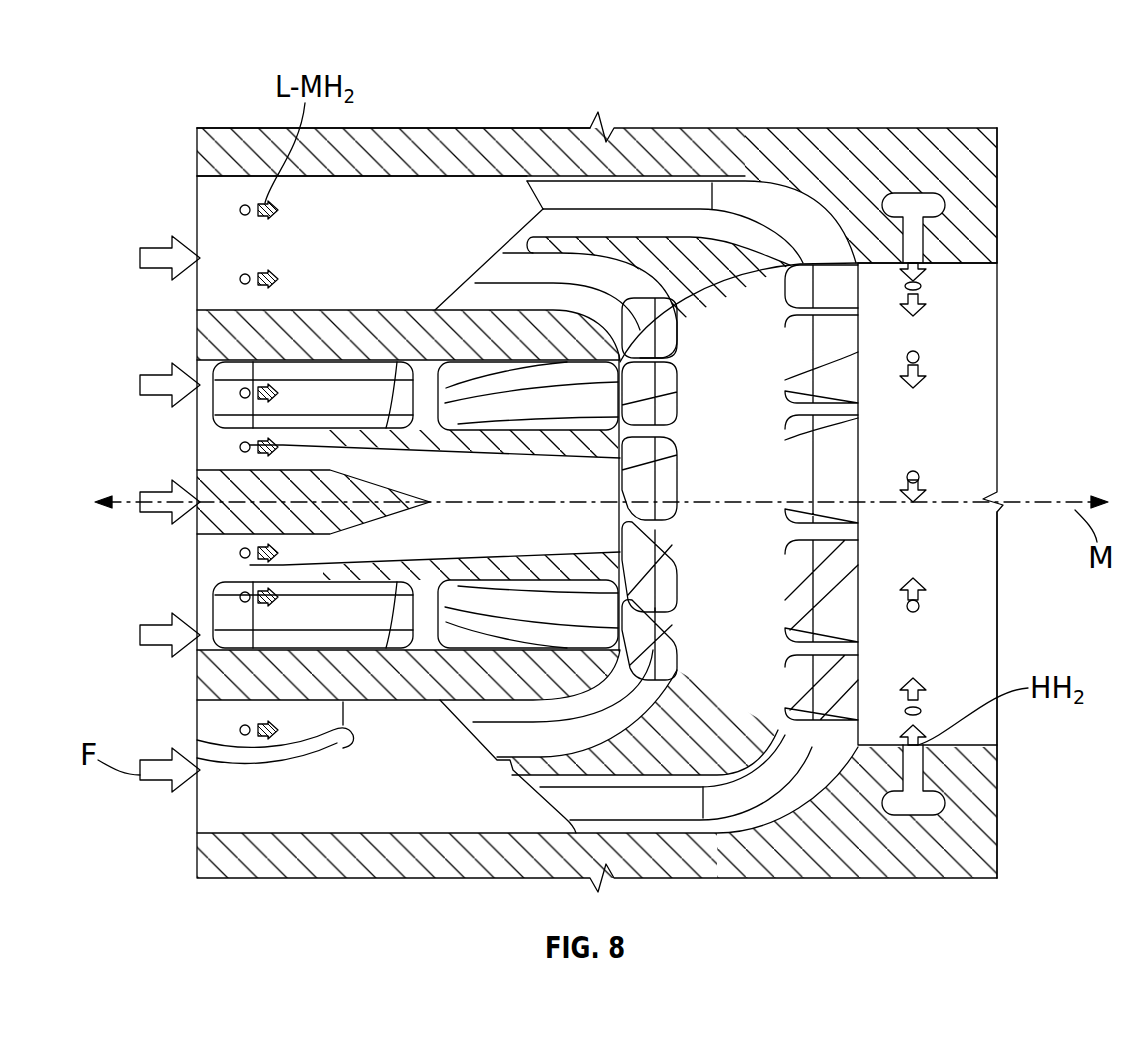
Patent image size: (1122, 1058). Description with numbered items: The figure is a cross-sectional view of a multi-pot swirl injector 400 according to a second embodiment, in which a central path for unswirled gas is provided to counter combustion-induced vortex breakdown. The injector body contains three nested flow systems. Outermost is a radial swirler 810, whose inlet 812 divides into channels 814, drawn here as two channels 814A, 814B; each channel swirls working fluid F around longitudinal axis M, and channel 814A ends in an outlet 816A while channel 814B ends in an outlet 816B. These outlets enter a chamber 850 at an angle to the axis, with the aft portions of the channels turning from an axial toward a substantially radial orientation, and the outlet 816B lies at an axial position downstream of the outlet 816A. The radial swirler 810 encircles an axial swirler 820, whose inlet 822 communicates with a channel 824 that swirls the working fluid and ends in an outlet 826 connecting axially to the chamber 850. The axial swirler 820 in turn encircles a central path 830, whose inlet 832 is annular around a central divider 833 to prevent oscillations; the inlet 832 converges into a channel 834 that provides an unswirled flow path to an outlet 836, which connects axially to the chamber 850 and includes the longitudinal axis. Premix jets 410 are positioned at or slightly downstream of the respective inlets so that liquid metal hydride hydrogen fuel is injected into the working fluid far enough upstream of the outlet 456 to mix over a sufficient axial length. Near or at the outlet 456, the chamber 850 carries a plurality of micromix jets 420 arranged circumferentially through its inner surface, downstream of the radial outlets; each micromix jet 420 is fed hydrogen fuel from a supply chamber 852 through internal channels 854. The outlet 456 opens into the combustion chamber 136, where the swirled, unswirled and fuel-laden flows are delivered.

The multi-pot swirl injector 400 is at (205, 72).
The premix jet 410 is at (240, 208).
The inlet 812 is at (205, 218).
The channel 814 is at (372, 218).
The radial swirler 810 is at (453, 173).
The channel 814A is at (550, 283).
The channel 814B is at (773, 217).
The outlet 816A is at (660, 327).
The outlet 816B is at (803, 262).
The supply chamber 852 is at (913, 200).
The internal channel 854 is at (925, 250).
The micromix jet 420 is at (922, 357).
The outlet 456 is at (968, 452).
The combustion chamber 136 is at (1040, 556).
The central divider 833 is at (352, 455).
The central path 830 is at (462, 430).
The inlet 832 is at (200, 447).
The inlet 822 is at (205, 650).
The axial swirler 820 is at (257, 713).
The channel 824 is at (315, 715).
The channel 834 is at (585, 505).
The chamber 850 is at (760, 705).
The outlet 836 is at (677, 560).
The outlet 826 is at (677, 648).